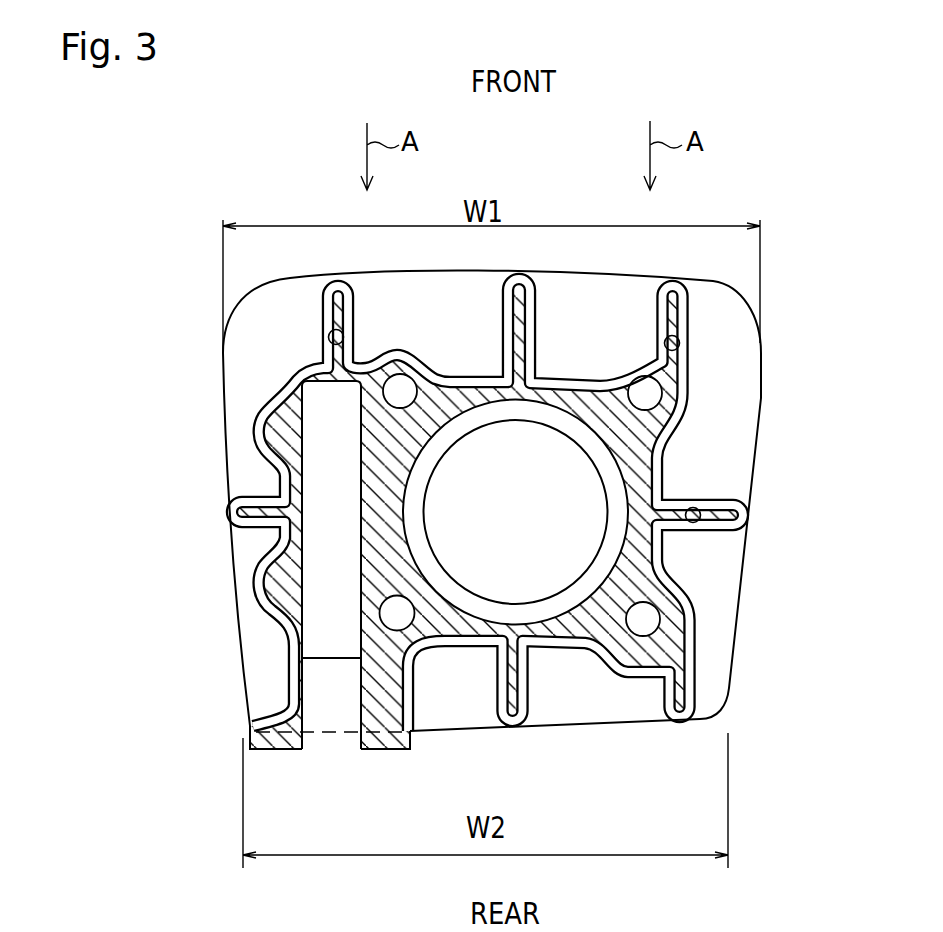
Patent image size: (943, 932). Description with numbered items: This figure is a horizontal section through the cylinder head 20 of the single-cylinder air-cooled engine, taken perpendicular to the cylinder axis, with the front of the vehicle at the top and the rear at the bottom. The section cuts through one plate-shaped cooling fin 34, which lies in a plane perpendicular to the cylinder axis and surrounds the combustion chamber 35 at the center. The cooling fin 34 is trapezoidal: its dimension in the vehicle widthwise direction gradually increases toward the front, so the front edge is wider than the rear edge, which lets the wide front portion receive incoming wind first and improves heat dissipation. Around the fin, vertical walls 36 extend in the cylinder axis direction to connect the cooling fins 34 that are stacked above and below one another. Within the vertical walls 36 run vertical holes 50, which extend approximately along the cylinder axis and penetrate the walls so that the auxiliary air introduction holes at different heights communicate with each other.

The cylinder head 20 is at (748, 599).
The cooling fin 34 is at (735, 379).
The combustion chamber 35 is at (528, 524).
The vertical wall 36 is at (337, 303).
The vertical hole 50 is at (340, 334).